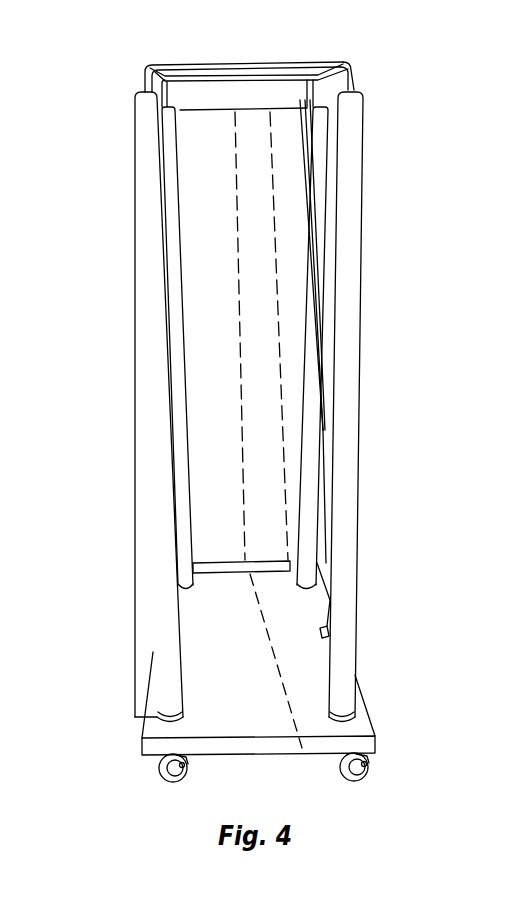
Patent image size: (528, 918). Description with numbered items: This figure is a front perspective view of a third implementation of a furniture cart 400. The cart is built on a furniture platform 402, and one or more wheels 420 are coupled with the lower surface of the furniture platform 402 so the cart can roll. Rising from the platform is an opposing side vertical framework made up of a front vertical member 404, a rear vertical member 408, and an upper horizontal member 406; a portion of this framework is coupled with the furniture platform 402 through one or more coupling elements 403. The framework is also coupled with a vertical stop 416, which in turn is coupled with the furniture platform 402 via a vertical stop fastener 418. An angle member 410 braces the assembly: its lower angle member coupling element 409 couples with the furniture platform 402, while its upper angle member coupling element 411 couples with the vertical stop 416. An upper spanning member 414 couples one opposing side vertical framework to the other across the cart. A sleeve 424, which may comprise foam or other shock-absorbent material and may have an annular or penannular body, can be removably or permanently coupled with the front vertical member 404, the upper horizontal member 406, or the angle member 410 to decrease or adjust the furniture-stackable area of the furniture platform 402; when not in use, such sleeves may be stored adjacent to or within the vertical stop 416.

The furniture cart 400 is at (436, 289).
The furniture platform 402 is at (360, 718).
The coupling element 403 is at (152, 708).
The front vertical member 404 is at (357, 68).
The upper horizontal member 406 is at (347, 63).
The rear vertical member 408 is at (307, 90).
The lower angle member coupling element 409 is at (323, 630).
The angle member 410 is at (330, 377).
The upper angle member coupling element 411 is at (307, 233).
The upper spanning member 414 is at (190, 63).
The vertical stop 416 is at (207, 153).
The vertical stop fastener 418 is at (230, 568).
The wheel 420 is at (373, 763).
The sleeve 424 is at (155, 460).